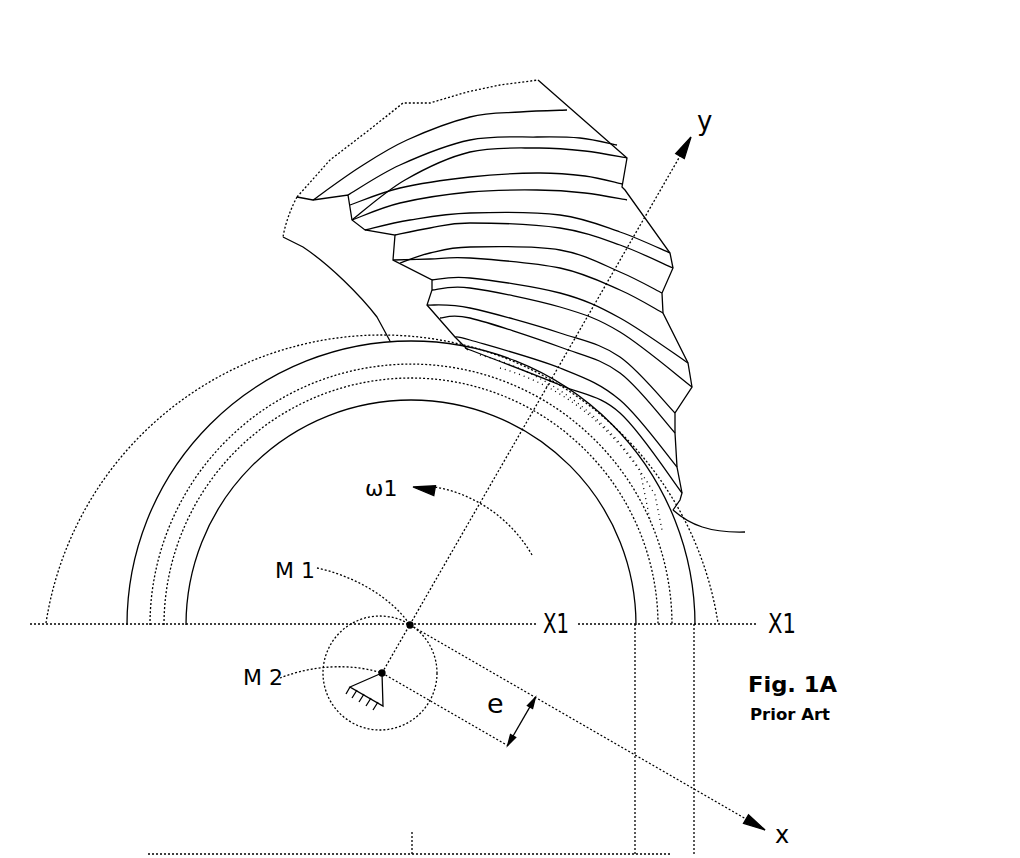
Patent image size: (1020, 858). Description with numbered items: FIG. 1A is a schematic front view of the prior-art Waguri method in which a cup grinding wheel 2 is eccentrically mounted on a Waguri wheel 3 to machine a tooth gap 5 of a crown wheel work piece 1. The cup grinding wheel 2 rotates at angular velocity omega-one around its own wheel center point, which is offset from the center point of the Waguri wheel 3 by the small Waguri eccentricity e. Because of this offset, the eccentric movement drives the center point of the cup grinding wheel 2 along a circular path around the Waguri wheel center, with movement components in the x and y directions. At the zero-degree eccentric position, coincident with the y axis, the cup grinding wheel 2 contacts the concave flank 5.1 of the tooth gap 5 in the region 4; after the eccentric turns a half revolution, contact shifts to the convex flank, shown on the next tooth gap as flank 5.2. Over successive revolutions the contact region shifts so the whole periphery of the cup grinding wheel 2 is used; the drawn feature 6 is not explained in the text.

The work piece 1 is at (565, 128).
The cup grinding wheel 2 is at (683, 568).
The Waguri wheel 3 is at (403, 710).
The region 4 is at (545, 375).
The tooth gap 5 is at (437, 308).
The concave flank 5.1 is at (728, 527).
The convex flank 5.2 is at (665, 450).
The worm thread 6 is at (686, 358).